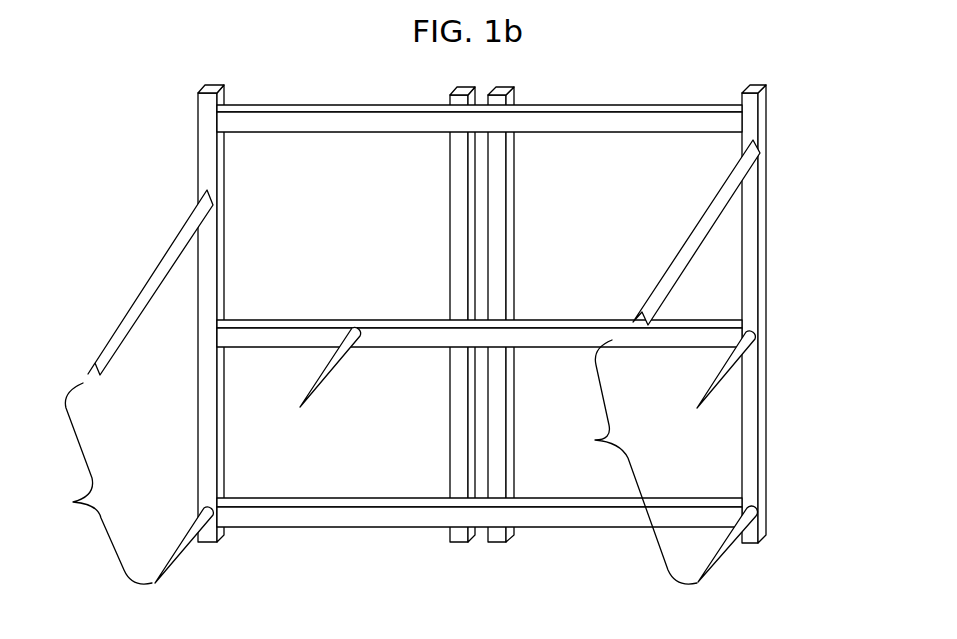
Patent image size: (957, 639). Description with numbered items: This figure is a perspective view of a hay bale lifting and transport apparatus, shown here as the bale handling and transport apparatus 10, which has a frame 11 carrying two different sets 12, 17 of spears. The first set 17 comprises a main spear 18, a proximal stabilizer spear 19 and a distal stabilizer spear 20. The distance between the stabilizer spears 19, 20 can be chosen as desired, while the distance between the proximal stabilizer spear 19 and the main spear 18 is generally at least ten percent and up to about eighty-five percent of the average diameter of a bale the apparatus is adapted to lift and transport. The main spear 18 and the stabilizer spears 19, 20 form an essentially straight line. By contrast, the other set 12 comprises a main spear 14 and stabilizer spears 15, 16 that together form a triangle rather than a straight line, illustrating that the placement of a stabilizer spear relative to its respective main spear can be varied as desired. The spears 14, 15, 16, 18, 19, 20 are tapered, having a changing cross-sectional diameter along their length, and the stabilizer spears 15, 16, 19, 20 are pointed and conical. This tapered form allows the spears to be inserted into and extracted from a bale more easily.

The bale handling and transport apparatus 10 is at (166, 77).
The frame 11 is at (620, 107).
The set of spears 12 is at (191, 387).
The main spear 14 is at (158, 265).
The stabilizer spear 15 is at (315, 392).
The stabilizer spear 16 is at (190, 527).
The first set of spears 17 is at (700, 362).
The main spear 18 is at (708, 207).
The proximal stabilizer spear 19 is at (712, 382).
The distal stabilizer spear 20 is at (718, 567).